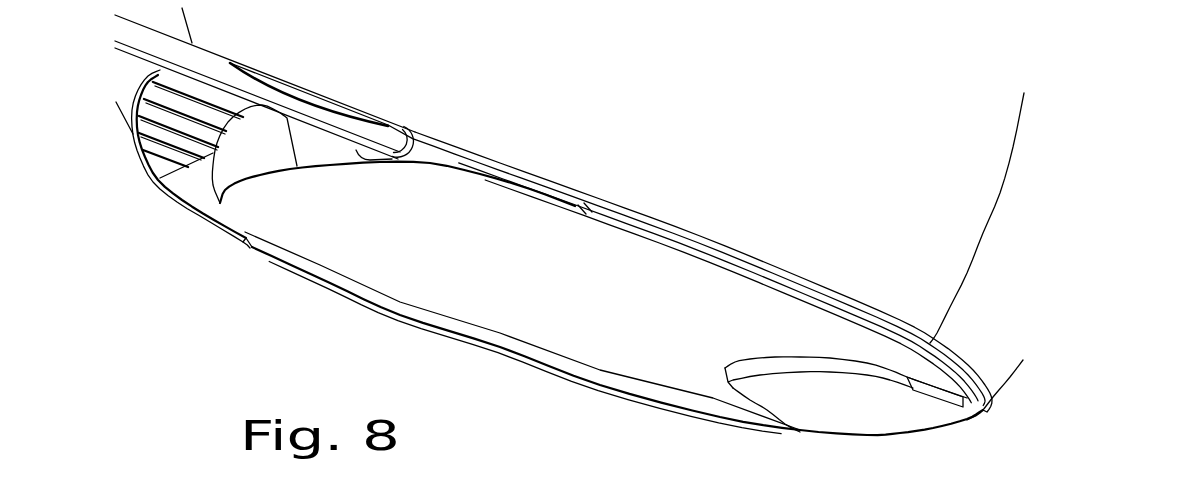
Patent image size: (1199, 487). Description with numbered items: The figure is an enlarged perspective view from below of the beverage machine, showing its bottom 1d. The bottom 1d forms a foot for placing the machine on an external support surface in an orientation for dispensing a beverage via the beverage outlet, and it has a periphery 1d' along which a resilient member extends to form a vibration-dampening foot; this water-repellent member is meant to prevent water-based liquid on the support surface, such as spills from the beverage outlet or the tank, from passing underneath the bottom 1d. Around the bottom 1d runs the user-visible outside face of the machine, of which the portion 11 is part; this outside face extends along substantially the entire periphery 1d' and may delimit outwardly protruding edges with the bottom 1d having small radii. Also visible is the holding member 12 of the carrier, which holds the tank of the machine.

The bottom 1d is at (352, 257).
The periphery 1d′ is at (597, 247).
The outside face 11 is at (993, 265).
The holding member 12 is at (845, 408).